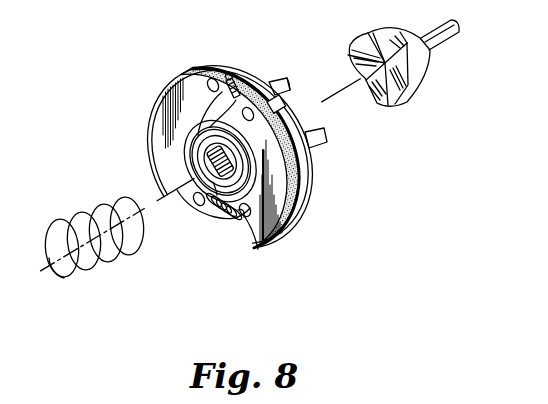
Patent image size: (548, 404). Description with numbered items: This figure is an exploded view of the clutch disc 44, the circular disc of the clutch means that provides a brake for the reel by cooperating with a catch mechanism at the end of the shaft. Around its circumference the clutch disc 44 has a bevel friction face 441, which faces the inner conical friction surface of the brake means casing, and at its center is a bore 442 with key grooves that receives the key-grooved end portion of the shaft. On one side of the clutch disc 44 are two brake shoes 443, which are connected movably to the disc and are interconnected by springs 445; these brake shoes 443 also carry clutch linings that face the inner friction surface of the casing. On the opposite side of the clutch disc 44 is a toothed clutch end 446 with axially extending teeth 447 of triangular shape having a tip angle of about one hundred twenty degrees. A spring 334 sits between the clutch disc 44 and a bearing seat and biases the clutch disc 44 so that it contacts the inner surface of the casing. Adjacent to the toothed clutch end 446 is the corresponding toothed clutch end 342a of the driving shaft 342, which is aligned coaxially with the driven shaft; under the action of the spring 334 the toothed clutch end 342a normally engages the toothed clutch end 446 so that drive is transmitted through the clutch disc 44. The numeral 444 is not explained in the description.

The clutch disc 44 is at (263, 250).
The circumferential bevel friction face 441 is at (229, 72).
The central bore 442 is at (200, 156).
The brake shoes 443 is at (178, 116).
The rim 444 is at (207, 66).
The springs 445 is at (222, 92).
The toothed clutch end 446 is at (275, 83).
The axially extending teeth 447 is at (318, 128).
The spring 334 is at (72, 214).
The driving shaft 342 is at (450, 48).
The toothed clutch end 342a is at (380, 103).